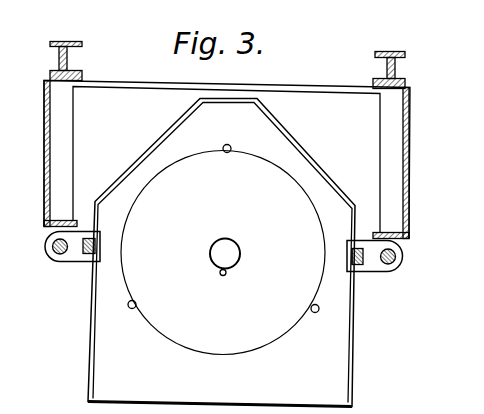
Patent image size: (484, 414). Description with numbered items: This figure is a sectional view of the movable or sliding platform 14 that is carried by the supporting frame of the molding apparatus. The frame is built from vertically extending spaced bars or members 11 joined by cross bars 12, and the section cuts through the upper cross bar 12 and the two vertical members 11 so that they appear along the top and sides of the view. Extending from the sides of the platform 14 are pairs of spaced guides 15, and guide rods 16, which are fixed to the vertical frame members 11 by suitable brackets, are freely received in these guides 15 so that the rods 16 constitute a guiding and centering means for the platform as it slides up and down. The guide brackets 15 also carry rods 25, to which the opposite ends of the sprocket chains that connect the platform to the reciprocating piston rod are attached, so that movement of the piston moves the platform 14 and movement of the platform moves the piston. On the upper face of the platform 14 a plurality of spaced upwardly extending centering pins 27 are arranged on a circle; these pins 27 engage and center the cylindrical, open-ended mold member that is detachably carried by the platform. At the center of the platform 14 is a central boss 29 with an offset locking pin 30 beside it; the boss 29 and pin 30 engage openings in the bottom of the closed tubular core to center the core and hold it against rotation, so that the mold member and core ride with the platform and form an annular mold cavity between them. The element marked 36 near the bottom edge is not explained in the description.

The T-shaped supporting beam 11 is at (397, 44).
The frame 12 is at (123, 82).
The panel plate 14 is at (290, 153).
The clamping screw 15 is at (77, 256).
The pivot bracket 16 is at (54, 252).
The screw slot 25 is at (350, 257).
The holes 27 is at (131, 311).
The central opening 29 is at (228, 246).
The small hole 30 is at (223, 278).
The base 36 is at (397, 407).